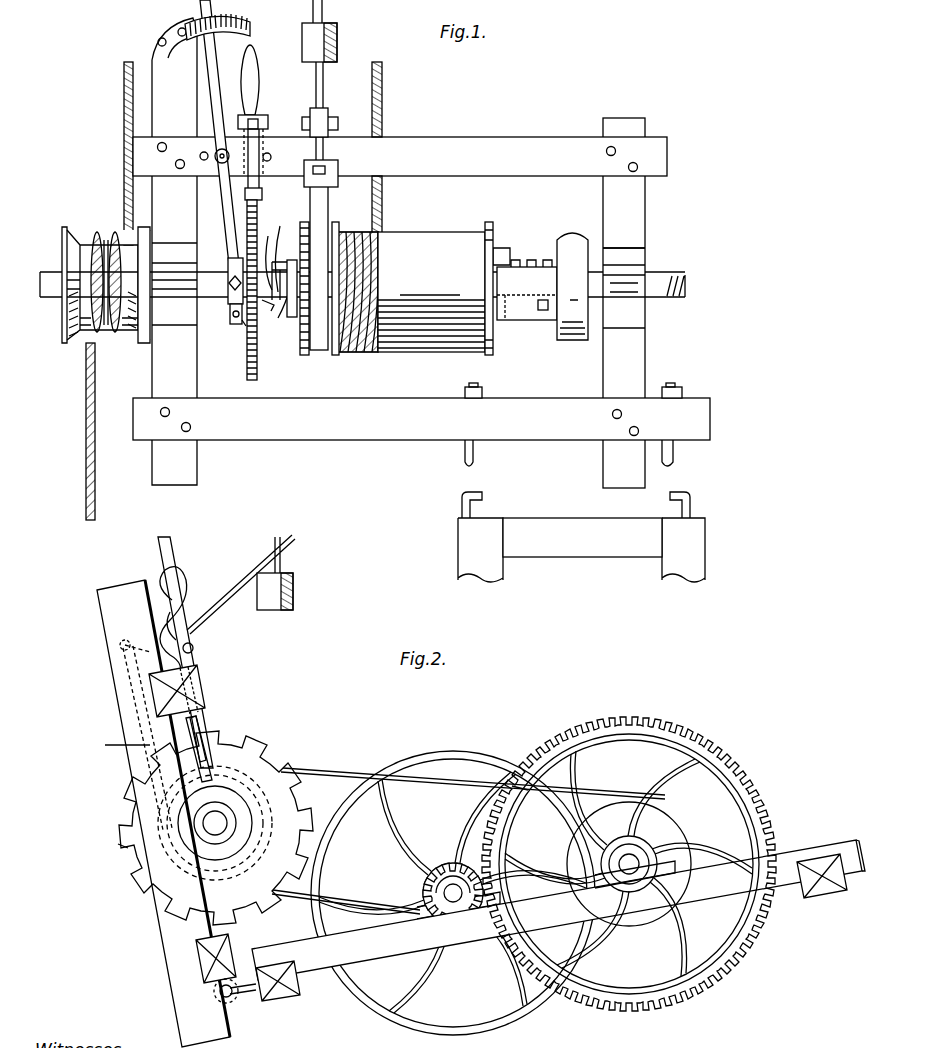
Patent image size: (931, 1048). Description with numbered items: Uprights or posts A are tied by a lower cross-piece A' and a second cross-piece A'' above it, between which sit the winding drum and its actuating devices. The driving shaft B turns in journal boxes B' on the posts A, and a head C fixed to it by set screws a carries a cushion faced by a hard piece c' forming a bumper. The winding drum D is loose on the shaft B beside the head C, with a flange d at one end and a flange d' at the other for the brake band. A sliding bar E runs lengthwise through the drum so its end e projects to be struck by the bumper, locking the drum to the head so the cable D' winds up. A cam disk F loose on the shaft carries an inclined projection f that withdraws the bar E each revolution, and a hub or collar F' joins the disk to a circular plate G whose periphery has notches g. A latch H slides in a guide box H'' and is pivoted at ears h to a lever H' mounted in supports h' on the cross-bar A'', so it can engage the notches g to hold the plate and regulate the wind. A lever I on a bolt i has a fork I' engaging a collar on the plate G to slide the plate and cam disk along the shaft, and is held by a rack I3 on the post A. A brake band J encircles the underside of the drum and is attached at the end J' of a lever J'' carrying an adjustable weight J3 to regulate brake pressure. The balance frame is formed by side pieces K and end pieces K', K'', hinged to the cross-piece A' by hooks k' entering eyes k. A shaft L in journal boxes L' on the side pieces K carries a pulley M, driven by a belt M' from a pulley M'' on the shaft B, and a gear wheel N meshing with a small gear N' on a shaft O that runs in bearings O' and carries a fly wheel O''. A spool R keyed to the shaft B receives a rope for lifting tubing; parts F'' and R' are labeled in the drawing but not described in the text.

In FIG. 1, the uprights or posts A is at (421, 253).
In FIG. 2, the uprights or posts A is at (163, 813).
In FIG. 2, the cross-piece A' is at (185, 958).
In FIG. 1, the second cross-piece A'' is at (400, 156).
In FIG. 1, the driving-shaft B is at (360, 286).
In FIG. 2, the driving-shaft B is at (215, 823).
In FIG. 1, the journal-boxes B' is at (398, 284).
In FIG. 1, the head C is at (527, 293).
In FIG. 1, the set bolts or screws a is at (531, 254).
In FIG. 1, the piece of steel or other hard material c' is at (537, 318).
In FIG. 1, the winding-drum D is at (431, 292).
In FIG. 1, the cable or rope D' is at (369, 207).
In FIG. 1, the flange or rim d is at (487, 277).
In FIG. 1, the flange d' is at (340, 275).
In FIG. 1, the sliding latch or bar E is at (284, 271).
In FIG. 1, the end of sliding latch e is at (394, 250).
In FIG. 1, the inclined projection f is at (265, 253).
In FIG. 1, the cam-disk F is at (267, 290).
In FIG. 1, the hub or collar F' is at (282, 325).
In FIG. 1, the pawl F'' is at (269, 314).
In FIG. 1, the circular plate G is at (247, 361).
In FIG. 2, the circular plate G is at (132, 864).
In FIG. 1, the notches g is at (240, 343).
In FIG. 2, the notches g is at (115, 837).
In FIG. 1, the latch H is at (258, 189).
In FIG. 1, the lever H' is at (260, 119).
In FIG. 2, the lever H' is at (185, 621).
In FIG. 1, the guide box or plate H'' is at (250, 156).
In FIG. 2, the guide box or plate H'' is at (220, 724).
In FIG. 1, the ears h is at (253, 107).
In FIG. 2, the ears h is at (197, 649).
In FIG. 1, the supports h' is at (265, 143).
In FIG. 1, the lever I is at (220, 141).
In FIG. 2, the lever I is at (185, 652).
In FIG. 1, the fork I' is at (222, 270).
In FIG. 1, the rack I3 is at (217, 20).
In FIG. 1, the pivot or bolt i is at (224, 148).
In FIG. 2, the pivot or bolt i is at (183, 691).
In FIG. 1, the brake-band J is at (314, 265).
In FIG. 2, the brake-band J is at (173, 742).
In FIG. 1, the end of lever J' is at (326, 142).
In FIG. 1, the lever J'' is at (321, 119).
In FIG. 1, the adjustable weight J3 is at (337, 126).
In FIG. 2, the adjustable weight J3 is at (251, 584).
In FIG. 1, the side pieces K is at (581, 550).
In FIG. 2, the side pieces K is at (558, 910).
In FIG. 1, the end piece K' is at (582, 537).
In FIG. 2, the end piece K' is at (271, 992).
In FIG. 2, the end piece K'' is at (822, 886).
In FIG. 1, the eyes k is at (574, 426).
In FIG. 2, the eyes k is at (228, 1013).
In FIG. 1, the hooks k' is at (587, 504).
In FIG. 2, the shaft L is at (635, 869).
In FIG. 2, the journal-boxes L' is at (632, 883).
In FIG. 2, the pulley M is at (629, 846).
In FIG. 2, the belt M' is at (468, 833).
In FIG. 1, the pulley M'' is at (572, 286).
In FIG. 2, the gear-wheel N is at (629, 856).
In FIG. 2, the small gear N' is at (453, 874).
In FIG. 2, the shaft O is at (453, 893).
In FIG. 2, the bearings O' is at (453, 914).
In FIG. 2, the fly-wheel O'' is at (486, 763).
In FIG. 1, the spool R is at (95, 373).
In FIG. 2, the spool R is at (215, 815).
In FIG. 1, the rope upright R' is at (114, 153).